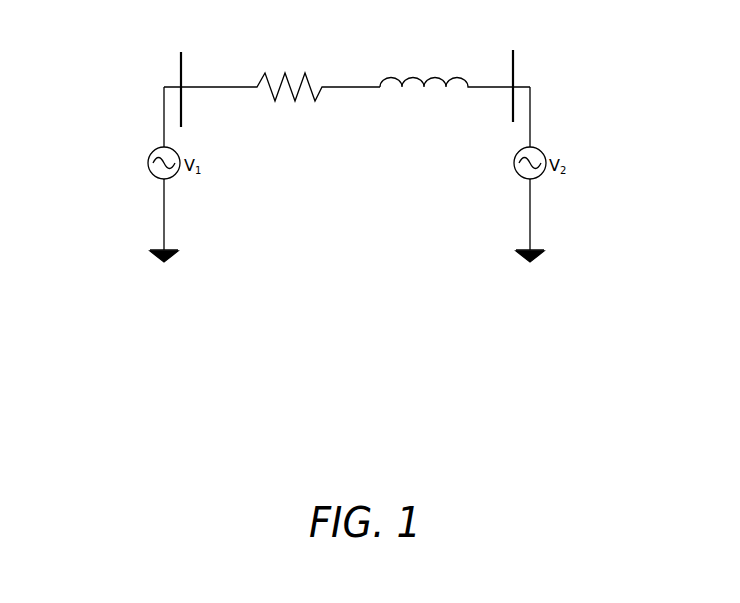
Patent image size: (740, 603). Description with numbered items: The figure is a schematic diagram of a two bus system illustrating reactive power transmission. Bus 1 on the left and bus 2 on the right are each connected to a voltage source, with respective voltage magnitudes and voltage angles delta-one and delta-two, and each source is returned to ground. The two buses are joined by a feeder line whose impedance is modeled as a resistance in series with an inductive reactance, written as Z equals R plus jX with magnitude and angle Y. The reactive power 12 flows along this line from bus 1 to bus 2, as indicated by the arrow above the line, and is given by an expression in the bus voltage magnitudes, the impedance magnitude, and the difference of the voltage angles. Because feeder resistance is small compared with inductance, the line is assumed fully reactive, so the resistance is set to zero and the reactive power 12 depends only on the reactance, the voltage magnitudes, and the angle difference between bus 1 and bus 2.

The bus 1 is at (122, 170).
The bus 2 is at (675, 170).
The reactive power Q12 12 is at (240, 62).